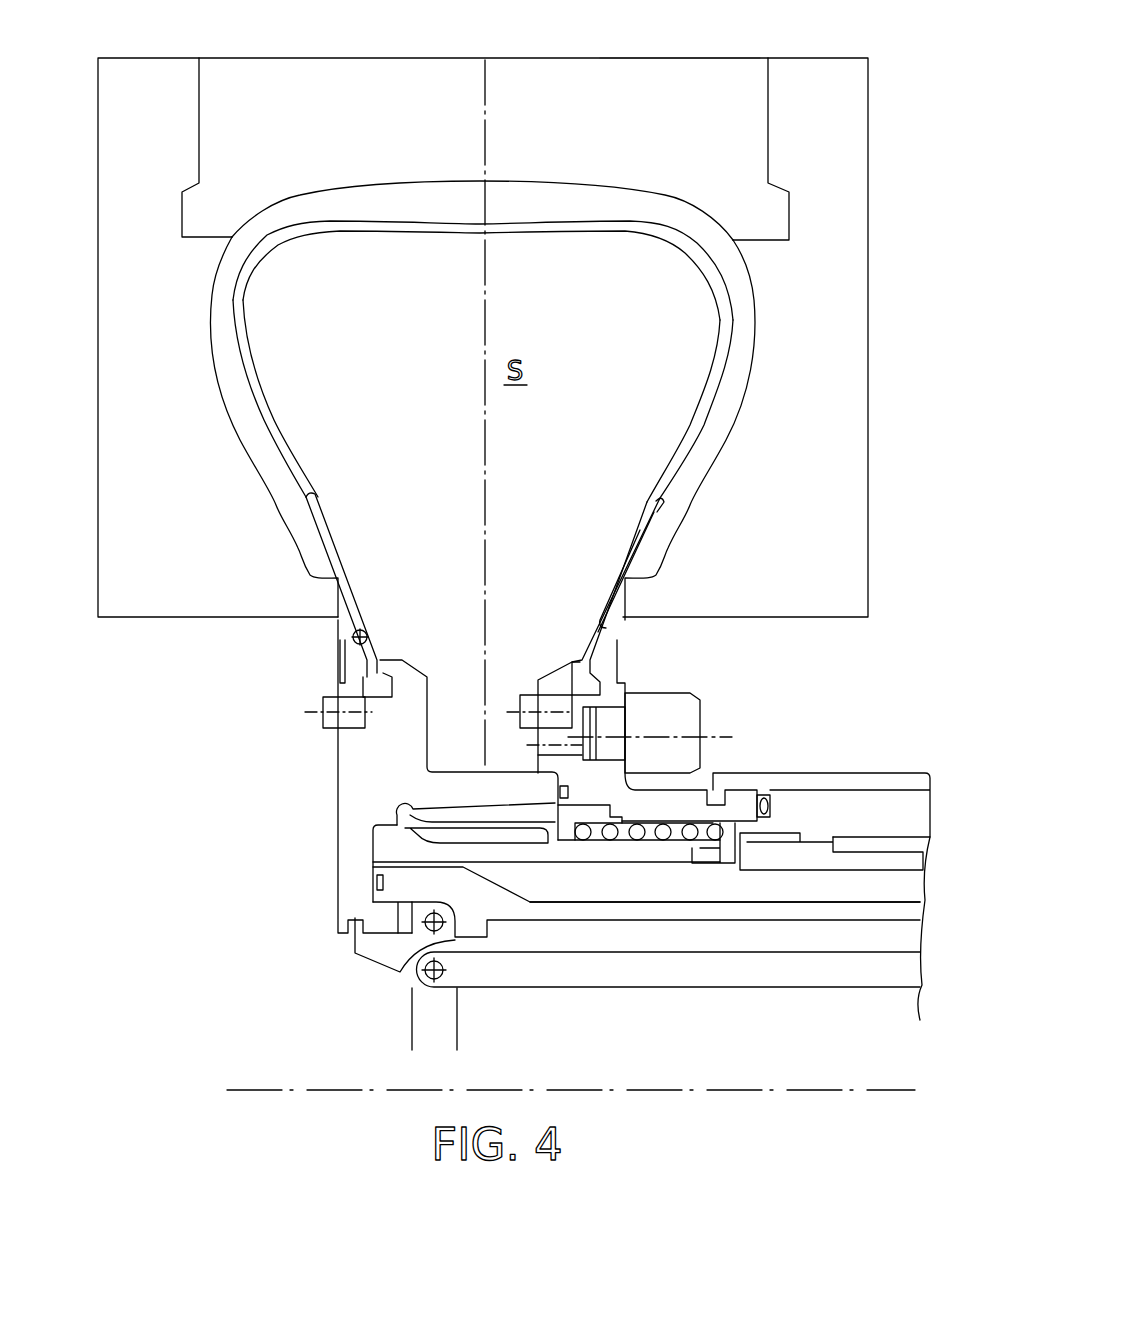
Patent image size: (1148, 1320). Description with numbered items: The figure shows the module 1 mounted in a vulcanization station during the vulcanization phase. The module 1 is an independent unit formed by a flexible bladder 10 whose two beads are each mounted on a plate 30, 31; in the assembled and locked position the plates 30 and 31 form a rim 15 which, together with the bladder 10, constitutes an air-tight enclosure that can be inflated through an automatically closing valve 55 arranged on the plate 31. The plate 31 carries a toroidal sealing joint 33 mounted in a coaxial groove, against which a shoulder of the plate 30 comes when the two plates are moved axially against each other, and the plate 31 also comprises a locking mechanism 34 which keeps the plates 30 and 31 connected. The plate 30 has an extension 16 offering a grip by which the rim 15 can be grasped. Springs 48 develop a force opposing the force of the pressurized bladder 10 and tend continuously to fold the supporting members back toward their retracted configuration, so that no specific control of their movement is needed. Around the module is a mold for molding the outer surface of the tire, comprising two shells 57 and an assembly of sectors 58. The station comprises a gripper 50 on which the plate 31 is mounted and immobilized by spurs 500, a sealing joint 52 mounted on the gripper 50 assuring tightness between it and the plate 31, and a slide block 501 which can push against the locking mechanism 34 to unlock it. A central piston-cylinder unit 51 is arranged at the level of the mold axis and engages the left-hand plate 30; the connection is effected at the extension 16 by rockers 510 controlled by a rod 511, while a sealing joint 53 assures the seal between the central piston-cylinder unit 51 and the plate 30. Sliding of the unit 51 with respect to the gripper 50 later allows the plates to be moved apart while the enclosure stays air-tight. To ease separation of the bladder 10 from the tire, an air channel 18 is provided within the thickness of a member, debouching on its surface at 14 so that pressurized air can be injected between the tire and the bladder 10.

The module 1 is at (305, 823).
The flexible bladder 10 is at (735, 346).
The air channel outlet 14 is at (645, 520).
The rim 15 is at (298, 755).
The extension 16 is at (362, 847).
The air channel 18 is at (622, 572).
The plate 30 is at (362, 785).
The plate 31 is at (655, 808).
The toroidal sealing joint 33 is at (568, 793).
The locking mechanism 34 is at (713, 858).
The springs 48 is at (360, 650).
The gripper 50 is at (900, 812).
The central piston-cylinder unit 51 is at (875, 912).
The sealing joint 52 is at (768, 797).
The sealing joint 53 is at (370, 885).
The automatically closing valve 55 is at (663, 718).
The shells 57 is at (153, 96).
The assembly of sectors 58 is at (641, 78).
The spurs 500 is at (845, 790).
The slide block 501 is at (805, 860).
The rockers 510 is at (393, 955).
The rod 511 is at (563, 978).